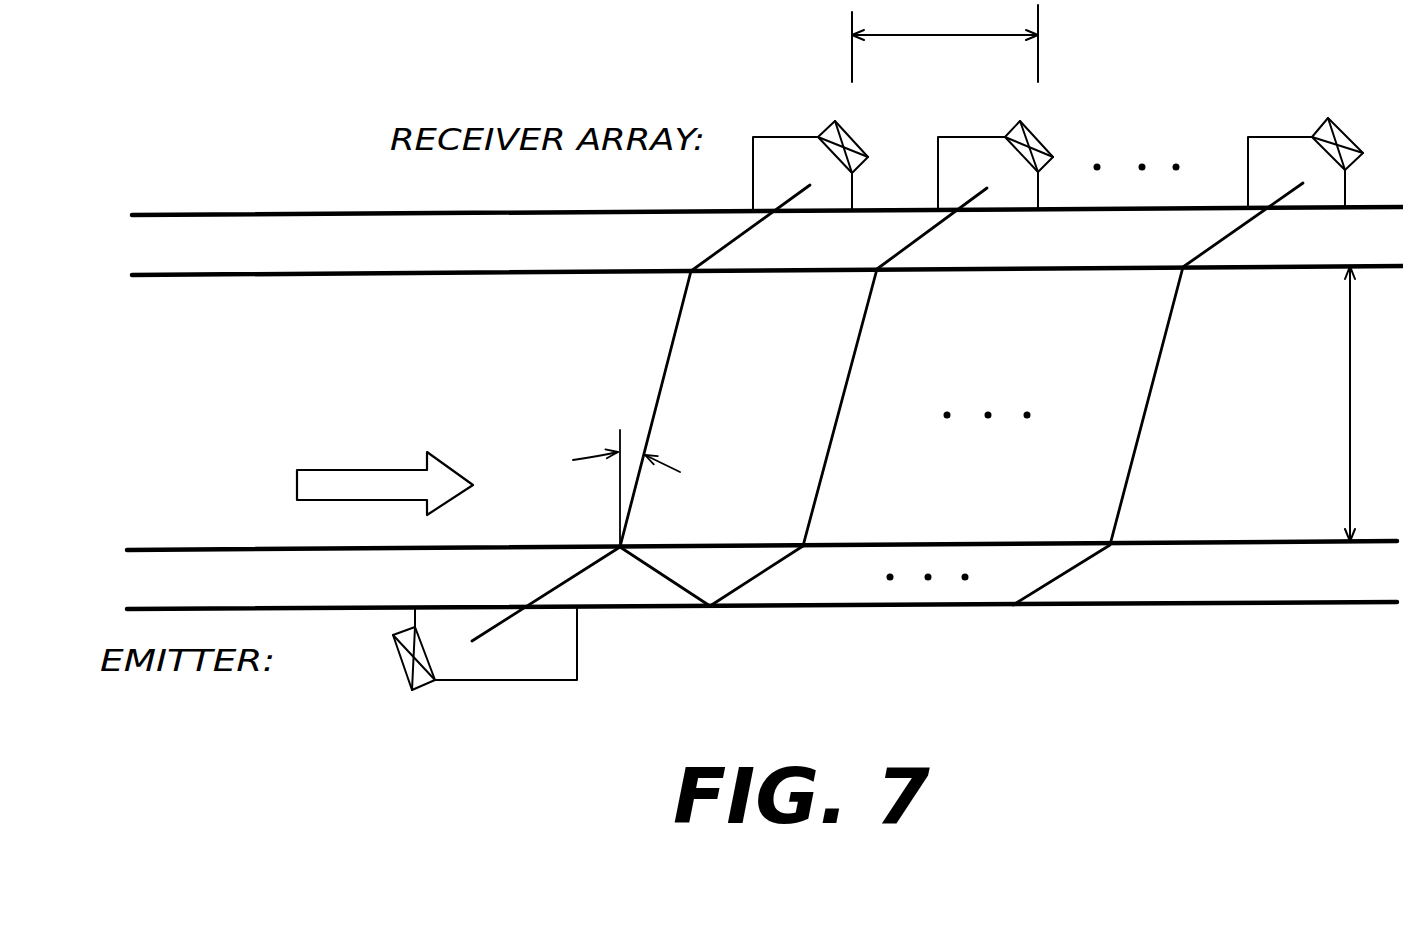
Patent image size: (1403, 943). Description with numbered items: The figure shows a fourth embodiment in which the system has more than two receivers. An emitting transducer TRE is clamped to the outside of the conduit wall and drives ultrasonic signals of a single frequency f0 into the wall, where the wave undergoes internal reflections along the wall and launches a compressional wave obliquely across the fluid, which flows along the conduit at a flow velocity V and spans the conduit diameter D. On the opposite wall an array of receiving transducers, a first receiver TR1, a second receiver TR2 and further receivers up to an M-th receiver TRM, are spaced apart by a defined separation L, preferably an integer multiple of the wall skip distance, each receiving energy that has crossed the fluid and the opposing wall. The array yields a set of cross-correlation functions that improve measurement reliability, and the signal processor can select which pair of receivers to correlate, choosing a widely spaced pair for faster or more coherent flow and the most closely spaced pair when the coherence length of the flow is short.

The first receiving transducer TR1 is at (808, 154).
The second receiving transducer TR2 is at (989, 154).
The M-th receiving transducer TRM is at (1296, 154).
The emitting transducer TRE is at (485, 663).
The single transmission frequency f0 is at (400, 663).
The receiver separation L is at (945, 41).
The conduit diameter D is at (1350, 397).
The flow velocity V is at (385, 472).